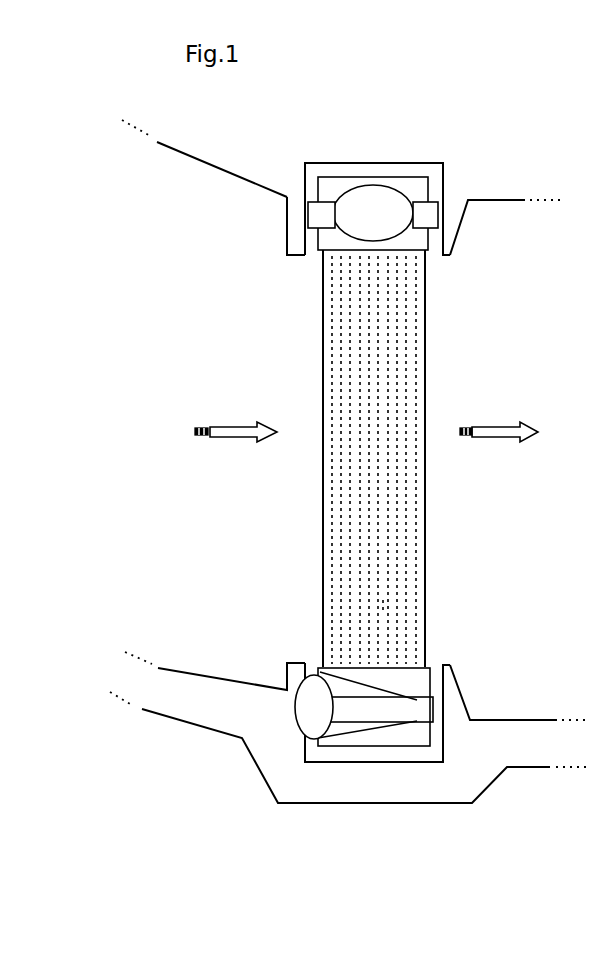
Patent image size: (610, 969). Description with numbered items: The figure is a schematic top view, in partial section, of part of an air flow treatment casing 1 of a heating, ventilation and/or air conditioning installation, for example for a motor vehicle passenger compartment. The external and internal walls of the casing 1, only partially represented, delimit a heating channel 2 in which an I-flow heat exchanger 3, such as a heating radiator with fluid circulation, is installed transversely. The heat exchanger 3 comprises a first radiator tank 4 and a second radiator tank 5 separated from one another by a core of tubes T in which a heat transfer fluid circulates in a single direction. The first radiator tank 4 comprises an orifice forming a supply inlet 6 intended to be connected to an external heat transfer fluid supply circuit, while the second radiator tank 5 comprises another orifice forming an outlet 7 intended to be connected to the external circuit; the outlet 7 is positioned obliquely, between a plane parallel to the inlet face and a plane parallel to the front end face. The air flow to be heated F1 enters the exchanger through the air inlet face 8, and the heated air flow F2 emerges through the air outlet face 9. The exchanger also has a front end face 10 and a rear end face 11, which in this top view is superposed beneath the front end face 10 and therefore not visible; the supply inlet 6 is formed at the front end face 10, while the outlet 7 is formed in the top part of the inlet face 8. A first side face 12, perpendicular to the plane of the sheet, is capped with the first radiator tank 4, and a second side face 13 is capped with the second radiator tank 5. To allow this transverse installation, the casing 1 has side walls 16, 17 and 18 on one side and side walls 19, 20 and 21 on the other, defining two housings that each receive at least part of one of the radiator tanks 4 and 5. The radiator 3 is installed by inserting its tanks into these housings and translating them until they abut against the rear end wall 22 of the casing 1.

The air flow treatment casing 1 is at (185, 153).
The heating channel 2 is at (188, 391).
The heat exchanger 3 is at (320, 578).
The first radiator tank 4 is at (430, 178).
The second radiator tank 5 is at (407, 682).
The supply inlet 6 is at (345, 193).
The outlet 7 is at (352, 733).
The air inlet face 8 is at (322, 510).
The air outlet face 9 is at (425, 523).
The front end face 10 is at (357, 375).
The rear end face 11 is at (427, 395).
The first side face 12 is at (360, 168).
The second side face 13 is at (385, 758).
The side wall 16 is at (397, 160).
The side wall 17 is at (275, 225).
The side wall 18 is at (473, 222).
The side wall 19 is at (427, 780).
The side wall 20 is at (287, 720).
The side wall 21 is at (473, 710).
The rear end wall 22 is at (173, 304).
The air flow to be treated F1 is at (227, 438).
The treated air flow F2 is at (502, 438).
The core of tubes T is at (380, 606).